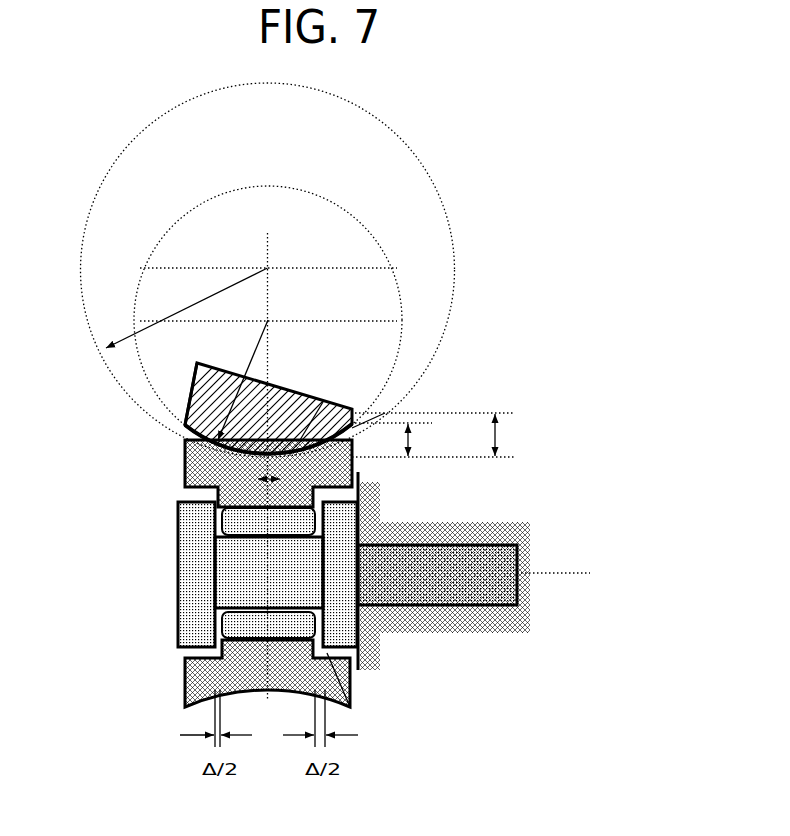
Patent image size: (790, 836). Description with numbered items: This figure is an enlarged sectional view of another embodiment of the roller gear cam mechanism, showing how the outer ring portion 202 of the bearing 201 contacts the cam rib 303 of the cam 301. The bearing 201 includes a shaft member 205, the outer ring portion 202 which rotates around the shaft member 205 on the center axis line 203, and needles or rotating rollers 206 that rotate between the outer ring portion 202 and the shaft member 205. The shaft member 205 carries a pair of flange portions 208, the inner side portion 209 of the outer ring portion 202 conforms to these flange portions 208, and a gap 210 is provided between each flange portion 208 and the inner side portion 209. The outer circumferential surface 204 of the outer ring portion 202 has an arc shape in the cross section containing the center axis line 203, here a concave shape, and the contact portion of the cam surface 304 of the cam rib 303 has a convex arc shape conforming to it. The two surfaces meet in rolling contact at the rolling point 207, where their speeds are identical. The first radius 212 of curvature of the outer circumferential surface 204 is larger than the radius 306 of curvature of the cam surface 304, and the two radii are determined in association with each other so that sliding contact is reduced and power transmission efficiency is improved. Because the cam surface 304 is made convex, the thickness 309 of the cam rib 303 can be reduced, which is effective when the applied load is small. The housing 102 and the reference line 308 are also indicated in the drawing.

The housing 102 is at (507, 617).
The bearing 201 is at (170, 563).
The outer ring portion 202 is at (385, 413).
The center axis line 203 is at (553, 572).
The outer circumferential surface 204 is at (185, 458).
The shaft member 205 is at (253, 596).
The needles or rotating rollers 206 is at (222, 518).
The rolling point 207 is at (323, 402).
The flange portions 208 is at (222, 630).
The inner side portion 209 is at (238, 652).
The gap 210 is at (350, 707).
The first radius of curvature 212 is at (195, 304).
The cam 301 is at (275, 374).
The cam rib 303 is at (280, 430).
The cam surface 304 is at (185, 426).
The radius of curvature 306 is at (255, 350).
The reference line 308 is at (412, 443).
The thickness 309 is at (497, 425).